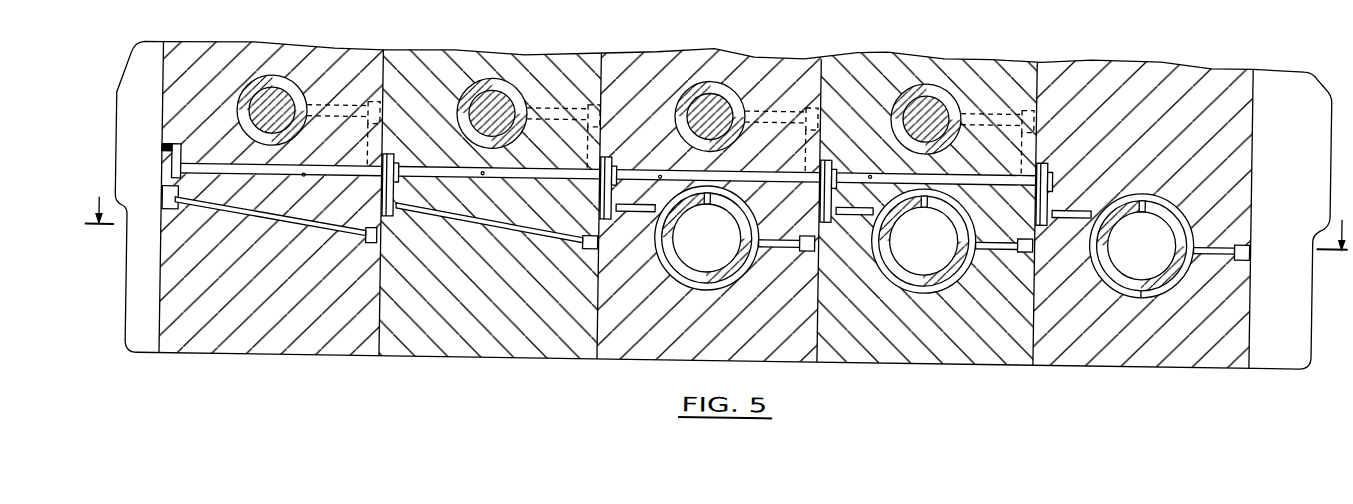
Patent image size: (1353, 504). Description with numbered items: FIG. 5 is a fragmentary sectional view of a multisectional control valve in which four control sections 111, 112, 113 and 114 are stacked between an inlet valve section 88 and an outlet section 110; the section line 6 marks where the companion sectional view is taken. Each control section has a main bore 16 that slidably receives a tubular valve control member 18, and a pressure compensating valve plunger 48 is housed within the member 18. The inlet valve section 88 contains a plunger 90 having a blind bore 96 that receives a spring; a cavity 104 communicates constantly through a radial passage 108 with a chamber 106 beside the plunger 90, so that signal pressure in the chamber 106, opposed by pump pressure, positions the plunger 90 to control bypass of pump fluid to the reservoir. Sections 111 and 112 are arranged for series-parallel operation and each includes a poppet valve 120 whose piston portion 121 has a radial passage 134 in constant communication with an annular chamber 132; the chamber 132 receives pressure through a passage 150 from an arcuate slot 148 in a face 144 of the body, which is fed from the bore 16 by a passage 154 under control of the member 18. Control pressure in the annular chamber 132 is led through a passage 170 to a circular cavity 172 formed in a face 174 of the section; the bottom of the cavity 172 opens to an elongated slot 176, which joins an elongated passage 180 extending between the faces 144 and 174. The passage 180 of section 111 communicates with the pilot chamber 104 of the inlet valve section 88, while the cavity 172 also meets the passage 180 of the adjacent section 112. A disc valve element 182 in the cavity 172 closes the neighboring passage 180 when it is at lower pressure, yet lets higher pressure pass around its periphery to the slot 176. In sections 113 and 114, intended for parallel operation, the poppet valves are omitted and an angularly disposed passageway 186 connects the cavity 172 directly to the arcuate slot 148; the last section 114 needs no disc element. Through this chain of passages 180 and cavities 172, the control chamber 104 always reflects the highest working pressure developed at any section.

The section line 6- 6 is at (709, 222).
The main bore 16 is at (296, 82).
The valve control member 18 is at (246, 90).
The pressure compensating valve plunger 48 is at (276, 87).
The inlet valve section 88 is at (1207, 349).
The plunger member 90 is at (1121, 178).
The blind bore 96 is at (1162, 206).
The cavity 104 is at (1144, 283).
The chamber 106 is at (1161, 252).
The radial passage 108 is at (1152, 172).
The outlet section 110 is at (142, 348).
The valve section 111 is at (928, 346).
The valve section 112 is at (638, 350).
The valve section 113 is at (468, 353).
The valve section 114 is at (307, 345).
The poppet valve 120 is at (674, 277).
The piston portion 121 is at (741, 216).
The annular chamber 132 is at (731, 269).
The radial passage 134 is at (710, 190).
The face 144 is at (1031, 284).
The arcuate slot 148 is at (361, 126).
The passage 150 is at (780, 235).
The passage 154 is at (344, 109).
The passage 170 is at (633, 202).
The cavity 172 is at (172, 149).
The face 174 is at (810, 310).
The elongated slot 176 is at (182, 157).
The elongated passage 180 is at (301, 172).
The disc valve element 182 is at (384, 150).
The angularly disposed passageway 186 is at (248, 215).